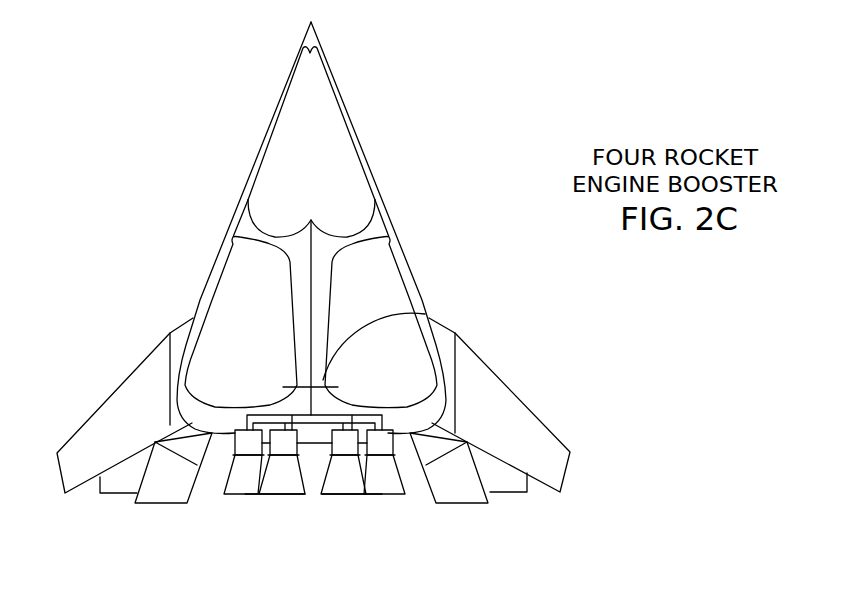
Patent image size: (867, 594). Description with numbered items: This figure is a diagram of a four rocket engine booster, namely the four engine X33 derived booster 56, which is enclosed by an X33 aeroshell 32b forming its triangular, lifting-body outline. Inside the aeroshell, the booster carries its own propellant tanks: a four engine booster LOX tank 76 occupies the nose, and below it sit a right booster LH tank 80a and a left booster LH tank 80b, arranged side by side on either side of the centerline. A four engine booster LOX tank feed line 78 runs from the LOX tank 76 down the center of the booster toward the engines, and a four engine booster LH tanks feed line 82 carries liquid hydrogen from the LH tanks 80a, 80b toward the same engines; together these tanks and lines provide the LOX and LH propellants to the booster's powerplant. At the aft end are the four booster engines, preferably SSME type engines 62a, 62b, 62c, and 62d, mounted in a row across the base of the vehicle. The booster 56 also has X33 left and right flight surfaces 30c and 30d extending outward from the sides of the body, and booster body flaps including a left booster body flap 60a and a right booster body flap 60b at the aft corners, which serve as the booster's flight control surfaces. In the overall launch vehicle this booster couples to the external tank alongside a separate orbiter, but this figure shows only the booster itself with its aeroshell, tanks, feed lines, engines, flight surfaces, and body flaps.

The four engine booster LOX tank 76 is at (330, 82).
The four engine X33 derived booster 56 is at (250, 163).
The X33 aeroshell 32b is at (367, 147).
The four engine booster LOX tank feed line 78 is at (313, 250).
The right booster LH tank 80a is at (402, 268).
The left booster LH tank 80b is at (229, 267).
The four engine booster LH tanks feed line 82 is at (425, 314).
The left flight surface 30c is at (116, 389).
The right flight surface 30d is at (507, 386).
The left booster body flap 60a is at (200, 503).
The right booster body flap 60b is at (423, 503).
The booster engine 62a is at (243, 502).
The booster engine 62b is at (297, 500).
The booster engine 62c is at (327, 500).
The booster engine 62d is at (377, 500).